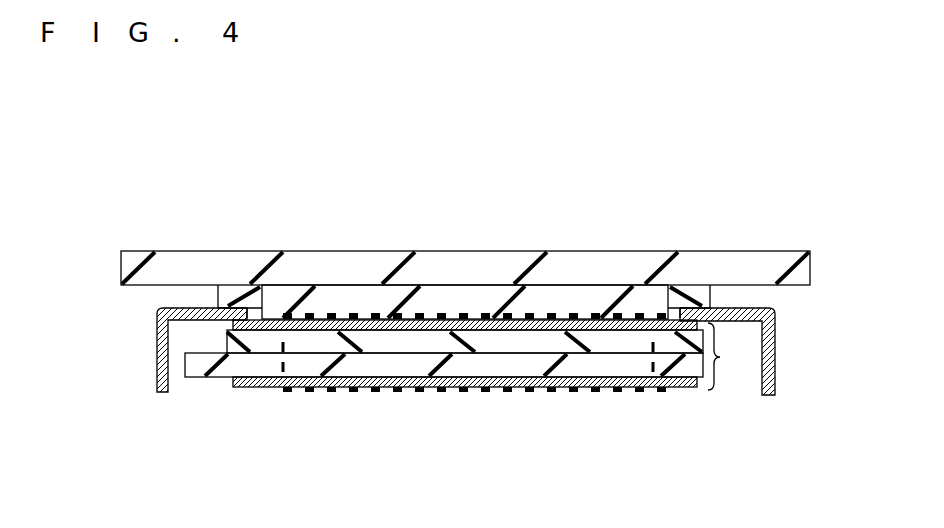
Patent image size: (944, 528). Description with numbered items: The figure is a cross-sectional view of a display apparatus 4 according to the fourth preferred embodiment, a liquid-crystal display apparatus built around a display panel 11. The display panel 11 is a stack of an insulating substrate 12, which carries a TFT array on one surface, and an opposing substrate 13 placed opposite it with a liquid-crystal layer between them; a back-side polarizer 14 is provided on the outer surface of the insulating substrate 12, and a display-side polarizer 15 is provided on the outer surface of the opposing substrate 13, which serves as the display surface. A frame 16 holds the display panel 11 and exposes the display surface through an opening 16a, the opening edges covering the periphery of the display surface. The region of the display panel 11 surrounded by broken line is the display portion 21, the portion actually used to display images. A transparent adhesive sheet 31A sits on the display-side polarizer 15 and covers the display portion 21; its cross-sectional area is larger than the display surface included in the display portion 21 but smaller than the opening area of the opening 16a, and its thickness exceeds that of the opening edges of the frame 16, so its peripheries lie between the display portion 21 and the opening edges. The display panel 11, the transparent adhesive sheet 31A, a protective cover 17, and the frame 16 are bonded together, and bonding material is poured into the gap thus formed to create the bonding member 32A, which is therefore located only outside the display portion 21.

The display apparatus 4 is at (459, 157).
The display panel 11 is at (467, 397).
The insulating substrate 12 is at (517, 363).
The opposing substrate 13 is at (398, 343).
The back-side polarizer 14 is at (678, 390).
The display-side polarizer 15 is at (303, 338).
The frame 16 is at (157, 366).
The opening 16a is at (252, 316).
The protective cover 17 is at (619, 275).
The display portion 21 is at (613, 393).
The transparent adhesive sheet 31A is at (360, 305).
The bonding member 32A is at (233, 307).